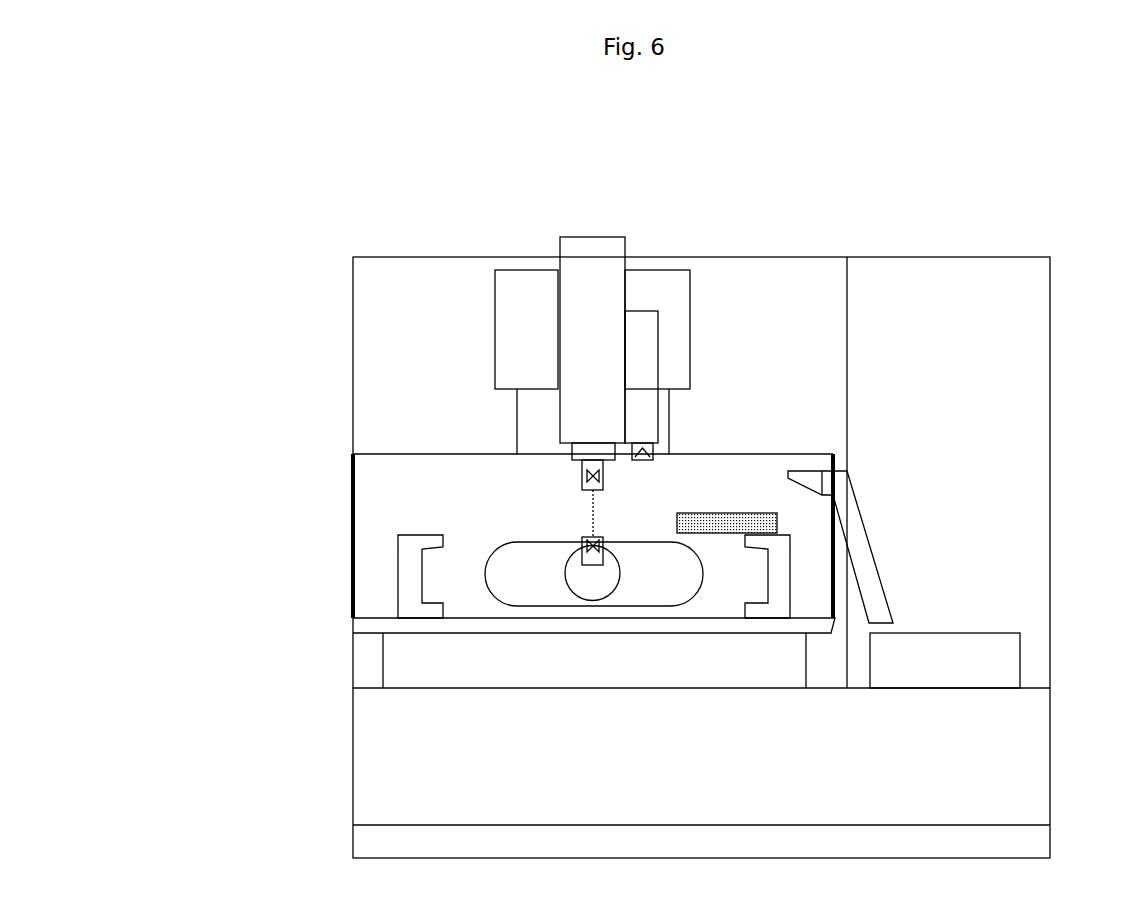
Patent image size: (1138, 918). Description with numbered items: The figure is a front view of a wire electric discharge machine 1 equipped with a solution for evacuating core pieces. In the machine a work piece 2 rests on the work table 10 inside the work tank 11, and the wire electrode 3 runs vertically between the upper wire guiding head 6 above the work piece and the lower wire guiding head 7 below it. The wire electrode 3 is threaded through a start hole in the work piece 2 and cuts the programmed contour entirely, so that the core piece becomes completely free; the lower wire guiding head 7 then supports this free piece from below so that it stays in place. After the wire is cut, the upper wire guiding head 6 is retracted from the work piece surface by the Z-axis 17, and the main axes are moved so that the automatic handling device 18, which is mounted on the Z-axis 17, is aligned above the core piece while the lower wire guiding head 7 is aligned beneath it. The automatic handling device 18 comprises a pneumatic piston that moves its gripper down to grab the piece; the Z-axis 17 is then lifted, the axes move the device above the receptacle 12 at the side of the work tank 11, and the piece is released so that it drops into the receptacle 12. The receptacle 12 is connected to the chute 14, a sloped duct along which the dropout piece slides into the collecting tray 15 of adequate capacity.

The wire electric discharge machine 1 is at (318, 320).
The work piece 2 is at (697, 517).
The wire electrode 3 is at (589, 513).
The upper wire guiding head 6 is at (581, 476).
The lower wire guiding head 7 is at (585, 538).
The work table 10 is at (413, 588).
The work tank 11 is at (732, 477).
The receptacle 12 is at (815, 482).
The chute 14 is at (868, 585).
The collecting tray 15 is at (968, 645).
The Z-axis 17 is at (586, 312).
The automatic handling device 18 is at (645, 427).